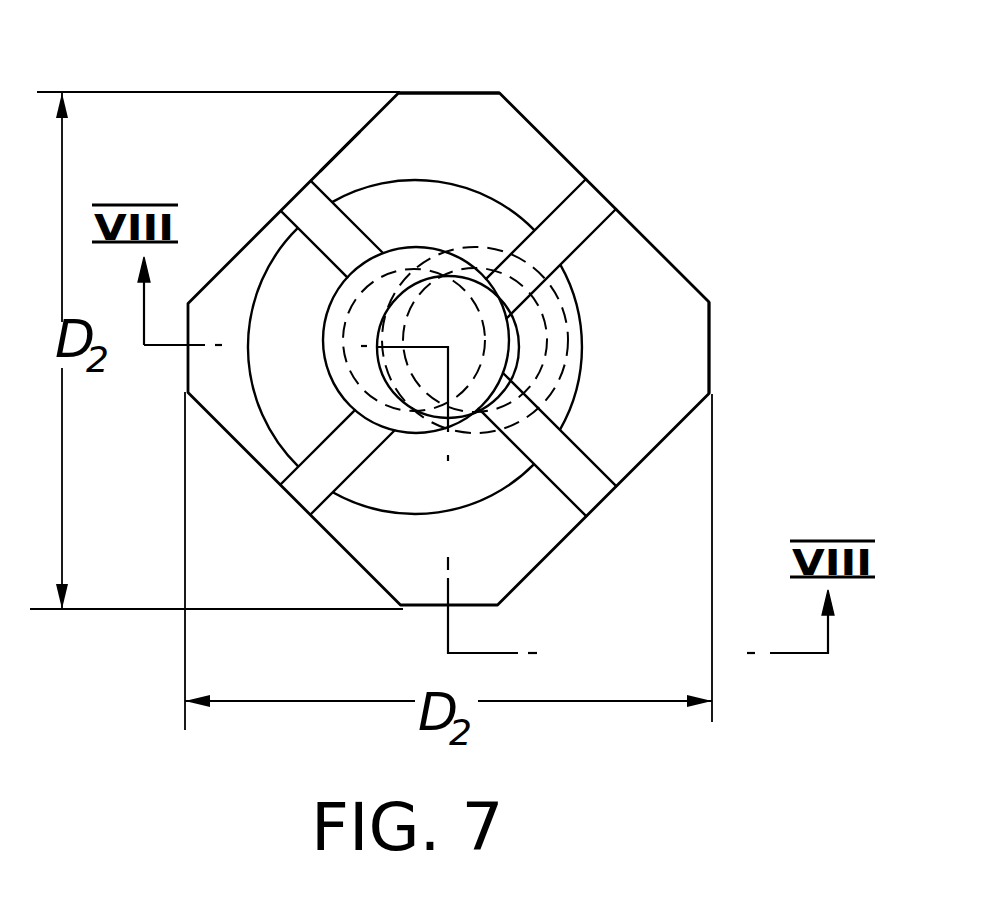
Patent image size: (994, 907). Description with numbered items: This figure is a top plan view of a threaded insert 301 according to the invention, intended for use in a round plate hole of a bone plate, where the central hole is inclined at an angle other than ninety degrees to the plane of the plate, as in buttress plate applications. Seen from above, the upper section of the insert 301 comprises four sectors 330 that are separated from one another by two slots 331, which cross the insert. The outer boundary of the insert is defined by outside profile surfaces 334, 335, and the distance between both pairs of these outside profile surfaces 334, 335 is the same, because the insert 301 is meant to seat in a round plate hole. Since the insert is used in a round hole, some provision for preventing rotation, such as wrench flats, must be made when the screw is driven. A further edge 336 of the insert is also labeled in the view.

The insert 301 is at (495, 327).
The sectors 330 is at (512, 136).
The slots 331 is at (588, 217).
The outside profile surface 334 is at (713, 326).
The outside profile surface 335 is at (432, 90).
The edge 336 is at (343, 153).